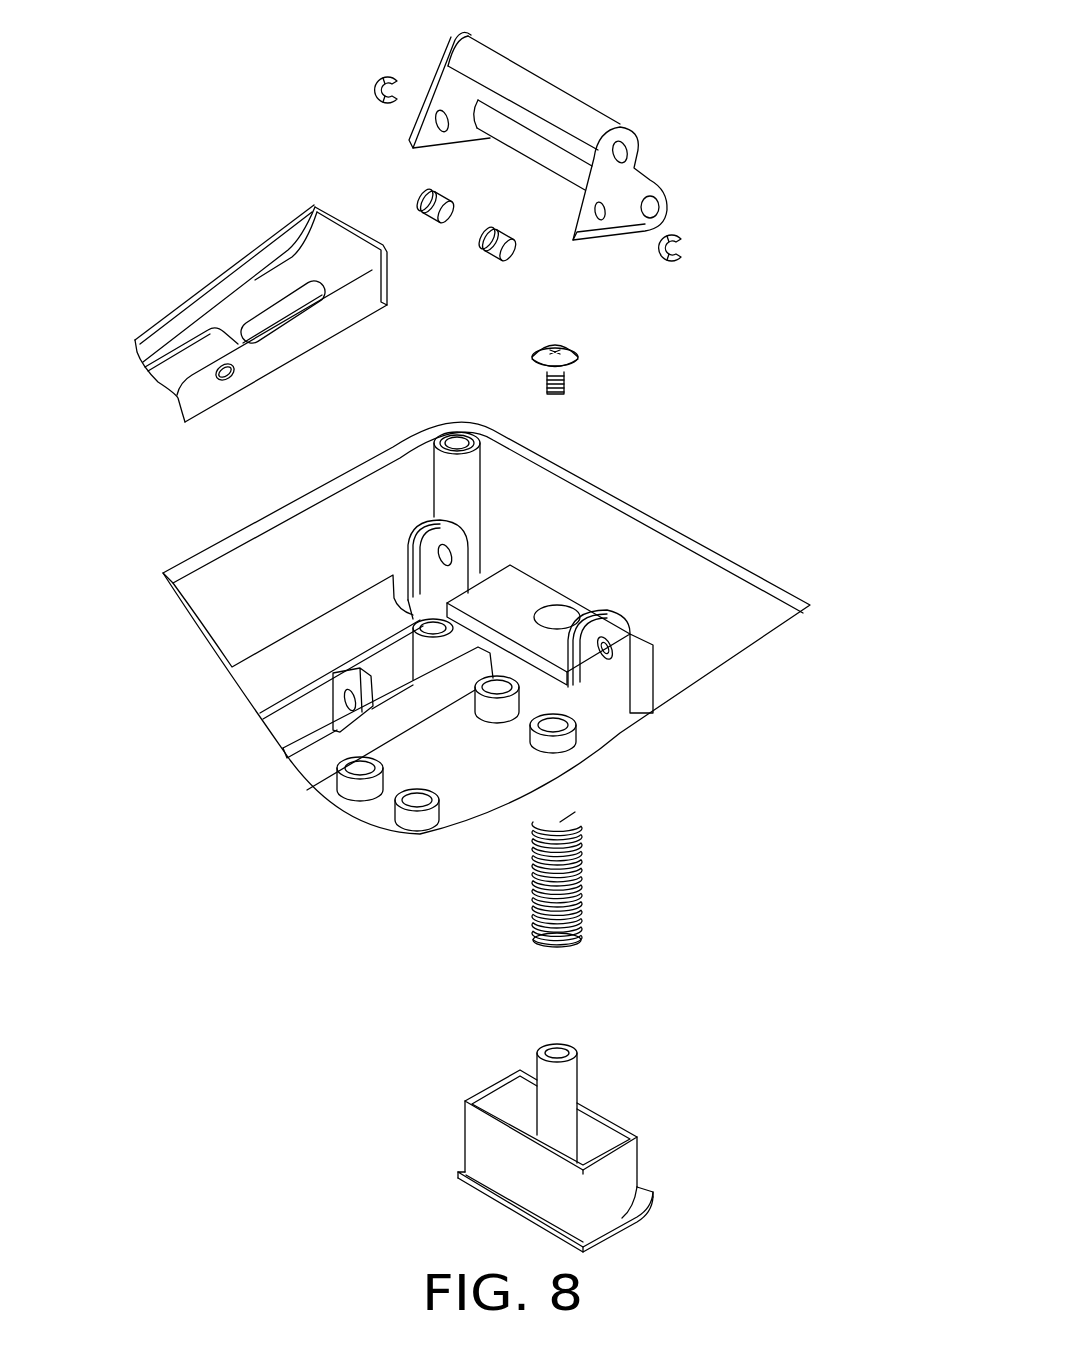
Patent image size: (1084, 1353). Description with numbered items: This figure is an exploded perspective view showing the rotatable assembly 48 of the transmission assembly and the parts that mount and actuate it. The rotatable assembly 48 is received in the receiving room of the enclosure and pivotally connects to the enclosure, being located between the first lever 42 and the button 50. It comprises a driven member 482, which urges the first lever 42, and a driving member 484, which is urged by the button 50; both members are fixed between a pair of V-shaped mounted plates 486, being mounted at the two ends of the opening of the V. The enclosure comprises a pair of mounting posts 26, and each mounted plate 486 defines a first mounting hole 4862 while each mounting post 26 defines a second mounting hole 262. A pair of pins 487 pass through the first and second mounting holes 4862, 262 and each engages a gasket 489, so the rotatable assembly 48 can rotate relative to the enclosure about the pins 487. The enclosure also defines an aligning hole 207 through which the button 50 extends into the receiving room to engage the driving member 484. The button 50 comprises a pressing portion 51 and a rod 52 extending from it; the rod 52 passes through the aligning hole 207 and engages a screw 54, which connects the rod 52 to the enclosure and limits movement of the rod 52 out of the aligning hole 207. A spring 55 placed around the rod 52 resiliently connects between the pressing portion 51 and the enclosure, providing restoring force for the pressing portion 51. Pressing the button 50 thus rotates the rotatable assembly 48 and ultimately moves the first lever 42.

The rotatable assembly 48 is at (602, 159).
The driven member 482 is at (526, 90).
The driving member 484 is at (525, 147).
The mounted plates 486 is at (622, 216).
The first mounting hole 4862 is at (602, 220).
The pins 487 is at (478, 243).
The gasket 489 is at (684, 248).
The first lever 42 is at (255, 288).
The screw 54 is at (578, 353).
The aligning hole 207 is at (555, 620).
The mounting posts 26 is at (486, 617).
The second mounting hole 262 is at (608, 650).
The spring 55 is at (580, 842).
The rod 52 is at (560, 1082).
The pressing portion 51 is at (636, 1183).
The button 50 is at (614, 1142).